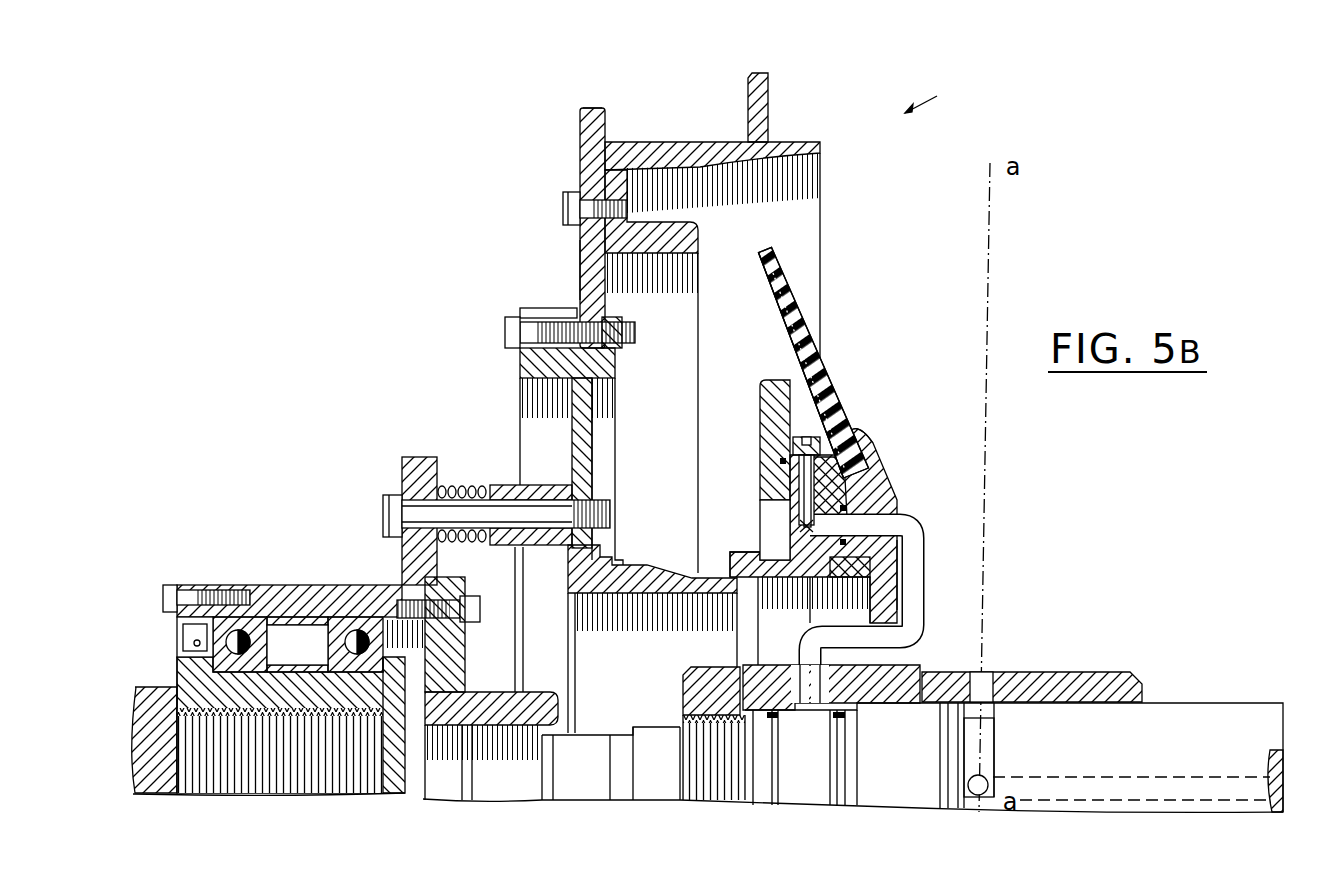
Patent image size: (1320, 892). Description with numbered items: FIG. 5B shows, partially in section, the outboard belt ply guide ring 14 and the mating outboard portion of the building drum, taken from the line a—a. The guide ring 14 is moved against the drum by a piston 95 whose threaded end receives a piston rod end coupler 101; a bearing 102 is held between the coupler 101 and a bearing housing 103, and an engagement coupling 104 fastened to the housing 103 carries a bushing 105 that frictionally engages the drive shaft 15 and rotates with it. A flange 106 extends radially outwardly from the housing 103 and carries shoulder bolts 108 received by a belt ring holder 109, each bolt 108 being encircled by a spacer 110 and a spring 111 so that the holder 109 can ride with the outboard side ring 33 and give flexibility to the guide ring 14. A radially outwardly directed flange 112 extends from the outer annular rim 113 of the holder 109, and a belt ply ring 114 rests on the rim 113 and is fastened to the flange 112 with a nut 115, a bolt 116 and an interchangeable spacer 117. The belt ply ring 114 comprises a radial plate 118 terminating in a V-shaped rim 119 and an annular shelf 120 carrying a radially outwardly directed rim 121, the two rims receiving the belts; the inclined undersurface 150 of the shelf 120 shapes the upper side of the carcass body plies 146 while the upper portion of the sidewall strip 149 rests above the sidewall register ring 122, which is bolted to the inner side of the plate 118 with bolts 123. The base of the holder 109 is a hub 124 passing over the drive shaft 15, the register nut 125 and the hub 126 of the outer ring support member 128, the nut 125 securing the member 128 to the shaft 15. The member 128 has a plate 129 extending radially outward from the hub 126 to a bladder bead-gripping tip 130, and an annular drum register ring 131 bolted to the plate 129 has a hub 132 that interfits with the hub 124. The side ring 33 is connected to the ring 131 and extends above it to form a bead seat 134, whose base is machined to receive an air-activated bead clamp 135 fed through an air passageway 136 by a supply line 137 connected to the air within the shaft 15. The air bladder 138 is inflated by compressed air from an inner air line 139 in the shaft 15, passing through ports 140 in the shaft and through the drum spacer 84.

The outboard belt ply guide ring 14 is at (936, 93).
The drive shaft 15 is at (587, 738).
The outboard side ring 33 is at (766, 438).
The drum spacer 84 is at (960, 675).
The piston 95 is at (142, 747).
The piston rod end coupler 101 is at (185, 670).
The bearing 102 is at (250, 617).
The bearing housing 103 is at (348, 592).
The engagement coupling 104 is at (457, 645).
The bushing 105 is at (485, 717).
The flange 106 is at (405, 473).
The shoulder bolt 108 is at (390, 518).
The belt ring holder 109 is at (580, 446).
The spacer 110 is at (512, 485).
The spring 111 is at (465, 488).
The radially outwardly directed flange 112 is at (515, 310).
The outer annular rim 113 is at (605, 370).
The belt ply ring 114 is at (578, 158).
The nut 115 is at (612, 332).
The bolt 116 is at (508, 332).
The interchangeable spacer 117 is at (557, 310).
The radial plate 118 is at (582, 266).
The V-shaped rim 119 is at (585, 125).
The annular shelf 120 is at (655, 140).
The radially outwardly directed rim 121 is at (764, 113).
The sidewall register ring 122 is at (675, 243).
The bolt 123 is at (568, 208).
The hub 124 is at (645, 590).
The register nut 125 is at (692, 693).
The hub 126 is at (783, 675).
The outer ring support member 128 is at (895, 487).
The plate 129 is at (890, 598).
The bladder bead-gripping tip 130 is at (852, 430).
The annular drum register ring 131 is at (795, 513).
The hub 132 is at (798, 565).
The bead seat 134 is at (793, 432).
The air-activated bead clamp 135 is at (847, 470).
The air passageway 136 is at (806, 478).
The supply line 137 is at (915, 532).
The air bladder 138 is at (808, 337).
The inner air line 139 is at (1132, 790).
The port 140 is at (990, 779).
The body plies 146 is at (782, 268).
The right sidewall strip 149 is at (773, 253).
The inclined undersurface 150 is at (800, 163).